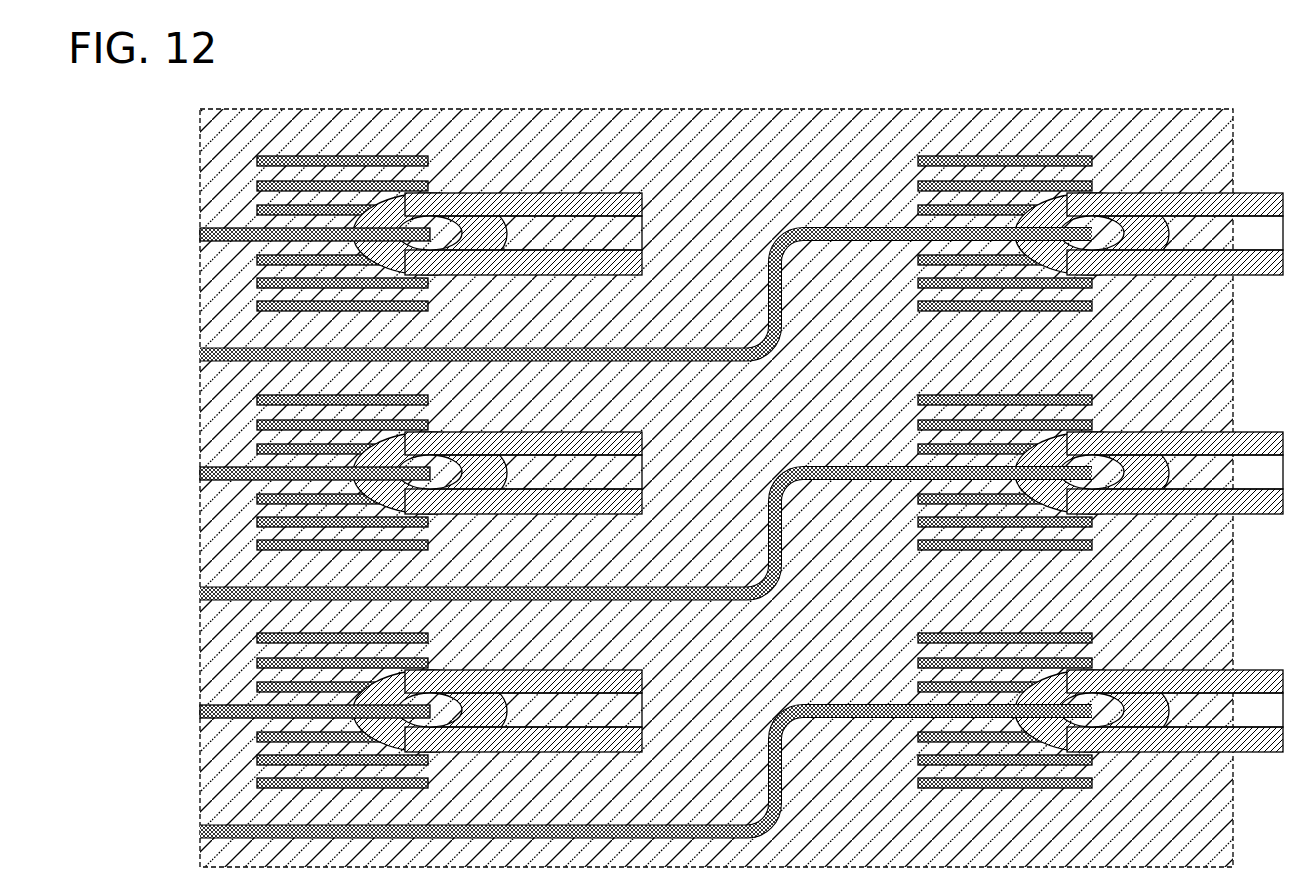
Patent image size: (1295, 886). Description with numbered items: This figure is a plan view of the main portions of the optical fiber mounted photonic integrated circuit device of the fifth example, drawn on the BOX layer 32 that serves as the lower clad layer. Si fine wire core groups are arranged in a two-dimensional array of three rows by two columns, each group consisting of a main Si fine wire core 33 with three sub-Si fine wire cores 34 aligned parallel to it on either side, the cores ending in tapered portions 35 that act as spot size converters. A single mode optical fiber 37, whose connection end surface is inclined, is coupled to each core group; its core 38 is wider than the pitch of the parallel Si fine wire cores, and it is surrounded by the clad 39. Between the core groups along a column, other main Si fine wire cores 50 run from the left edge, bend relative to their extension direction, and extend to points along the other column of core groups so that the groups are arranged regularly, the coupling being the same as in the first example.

The BOX layer 32 is at (519, 120).
The main Si fine wire core 33 is at (200, 235).
The sub-Si fine wire core 34 is at (256, 190).
The tapered portion 35 is at (281, 109).
The single mode optical fiber 37 is at (702, 178).
The core of the single mode optical fiber 38 is at (642, 235).
The clad of the single mode optical fiber 39 is at (642, 270).
The main Si fine wire core 50 is at (200, 355).